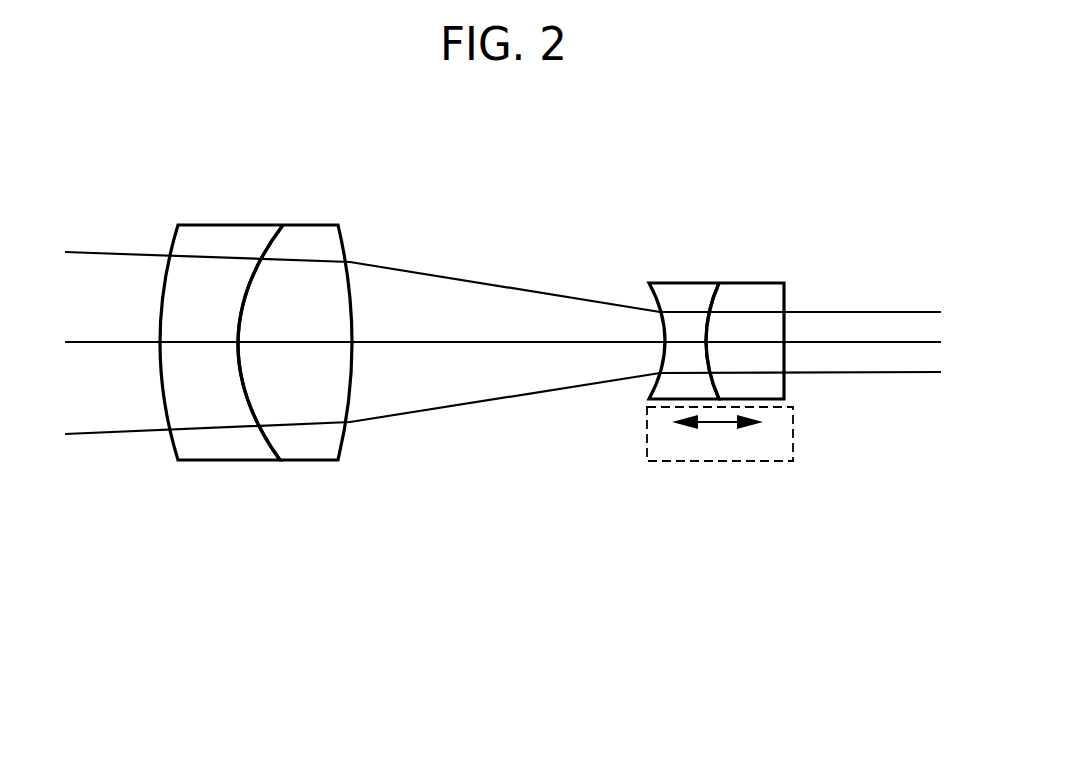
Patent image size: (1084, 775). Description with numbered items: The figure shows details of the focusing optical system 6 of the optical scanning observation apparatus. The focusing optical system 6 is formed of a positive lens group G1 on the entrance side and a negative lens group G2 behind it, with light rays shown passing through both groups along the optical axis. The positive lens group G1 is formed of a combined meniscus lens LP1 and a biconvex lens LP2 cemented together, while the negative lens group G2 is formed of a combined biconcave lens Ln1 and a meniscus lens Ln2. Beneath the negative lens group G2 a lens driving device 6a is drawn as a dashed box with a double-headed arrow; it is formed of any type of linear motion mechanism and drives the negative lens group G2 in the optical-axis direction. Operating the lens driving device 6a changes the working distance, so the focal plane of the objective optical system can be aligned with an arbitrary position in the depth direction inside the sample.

The focusing optical system 6 is at (503, 356).
The lens driving device 6a is at (723, 461).
The positive lens group G1 is at (256, 276).
The negative lens group G2 is at (716, 272).
The meniscus lens LP1 is at (224, 233).
The biconvex lens LP2 is at (295, 302).
The biconcave lens Ln1 is at (685, 290).
The meniscus lens Ln2 is at (745, 290).